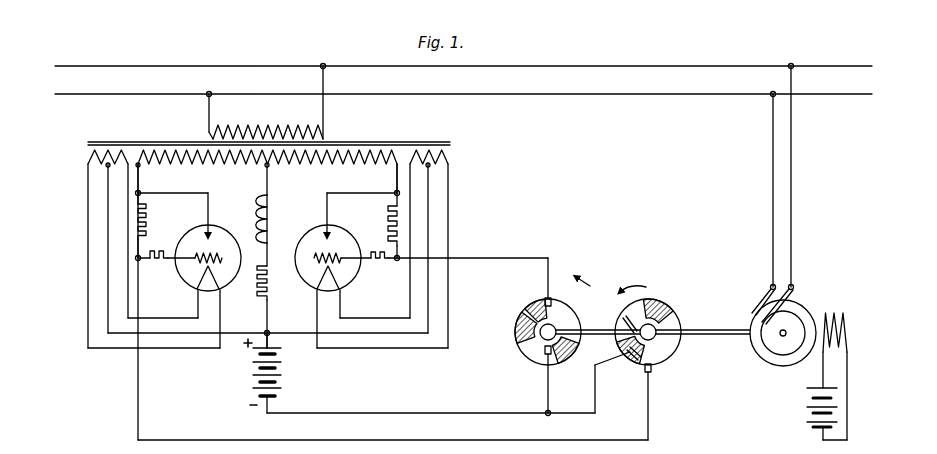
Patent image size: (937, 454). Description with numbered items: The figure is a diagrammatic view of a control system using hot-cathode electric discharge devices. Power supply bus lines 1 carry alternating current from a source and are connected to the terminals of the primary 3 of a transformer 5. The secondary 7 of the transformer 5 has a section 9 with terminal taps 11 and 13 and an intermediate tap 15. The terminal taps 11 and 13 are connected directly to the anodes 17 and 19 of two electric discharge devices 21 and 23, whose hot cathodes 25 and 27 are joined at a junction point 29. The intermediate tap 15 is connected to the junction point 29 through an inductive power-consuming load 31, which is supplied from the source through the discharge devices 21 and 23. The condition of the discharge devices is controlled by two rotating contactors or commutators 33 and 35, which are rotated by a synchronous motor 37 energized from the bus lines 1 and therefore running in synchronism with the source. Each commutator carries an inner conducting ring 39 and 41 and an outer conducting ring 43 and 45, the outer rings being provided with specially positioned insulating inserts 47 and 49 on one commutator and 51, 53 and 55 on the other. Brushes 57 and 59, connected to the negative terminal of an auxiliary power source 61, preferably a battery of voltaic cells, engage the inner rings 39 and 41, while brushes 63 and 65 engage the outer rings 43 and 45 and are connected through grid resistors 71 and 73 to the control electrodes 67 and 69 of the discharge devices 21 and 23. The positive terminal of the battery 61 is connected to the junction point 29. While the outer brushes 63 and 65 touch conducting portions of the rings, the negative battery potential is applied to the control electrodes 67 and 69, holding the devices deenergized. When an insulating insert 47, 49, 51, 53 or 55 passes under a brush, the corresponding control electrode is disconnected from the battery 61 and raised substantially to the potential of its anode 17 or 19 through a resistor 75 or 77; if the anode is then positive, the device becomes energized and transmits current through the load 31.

The power supply bus lines 1 is at (500, 93).
The primary 3 is at (325, 133).
The transformer 5 is at (421, 129).
The secondary 7 is at (69, 169).
The section 9 is at (203, 160).
The terminal tap 11 is at (140, 168).
The terminal tap 13 is at (393, 168).
The intermediate tap 15 is at (269, 168).
The anode 17 is at (210, 232).
The anode 19 is at (329, 232).
The electric discharge device 21 is at (180, 236).
The electric discharge device 23 is at (295, 262).
The cathode 25 is at (219, 289).
The cathode 27 is at (318, 278).
The junction point 29 is at (269, 331).
The inductive power-consuming load 31 is at (310, 219).
The rotating contactor or commutator 33 is at (709, 383).
The rotating contactor or commutator 35 is at (505, 369).
The synchronous motor 37 is at (789, 393).
The inner conducting ring 39 is at (666, 327).
The inner conducting ring 41 is at (560, 323).
The outer conducting ring 43 is at (673, 345).
The outer conducting ring 45 is at (516, 340).
The insulating insert 47 is at (635, 363).
The insulating insert 49 is at (654, 305).
The insulating insert 51 is at (545, 300).
The insulating insert 53 is at (567, 354).
The insulating insert 55 is at (524, 314).
The brush 57 is at (626, 322).
The brush 59 is at (547, 355).
The auxiliary power source 61 is at (310, 387).
The brush 63 is at (653, 374).
The brush 65 is at (553, 293).
The control electrode 67 is at (201, 268).
The control electrode 69 is at (340, 275).
The grid resistor 71 is at (168, 262).
The grid resistor 73 is at (376, 266).
The resistor 75 is at (148, 222).
The resistor 77 is at (387, 232).